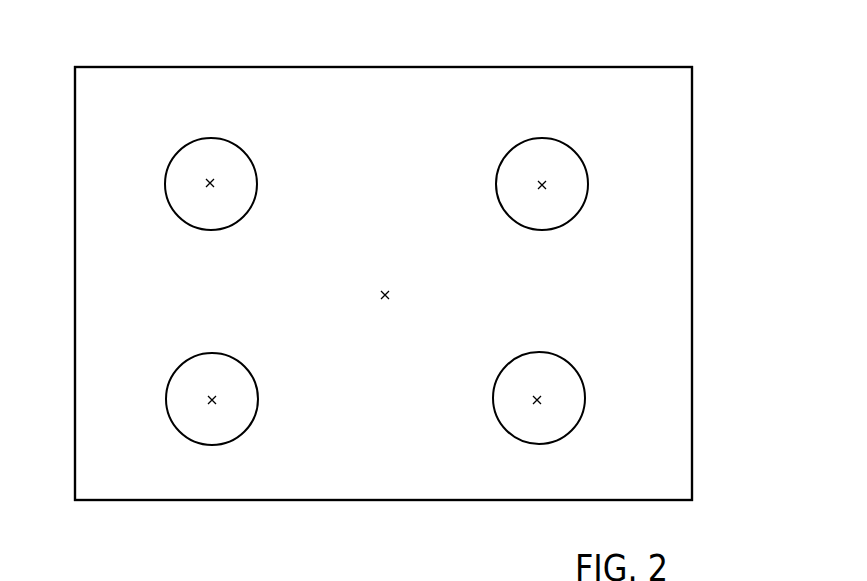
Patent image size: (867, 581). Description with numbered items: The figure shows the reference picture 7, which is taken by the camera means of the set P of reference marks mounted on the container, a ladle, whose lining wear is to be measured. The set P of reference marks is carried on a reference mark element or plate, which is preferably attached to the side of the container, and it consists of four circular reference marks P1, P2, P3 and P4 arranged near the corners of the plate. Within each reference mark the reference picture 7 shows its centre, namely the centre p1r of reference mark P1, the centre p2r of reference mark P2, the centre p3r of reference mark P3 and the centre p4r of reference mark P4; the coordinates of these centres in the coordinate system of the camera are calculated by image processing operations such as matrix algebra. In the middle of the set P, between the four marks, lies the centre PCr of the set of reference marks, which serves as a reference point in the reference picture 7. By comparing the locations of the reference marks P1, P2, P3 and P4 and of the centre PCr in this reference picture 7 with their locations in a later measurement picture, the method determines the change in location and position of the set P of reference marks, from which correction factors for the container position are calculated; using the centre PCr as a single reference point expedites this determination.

The reference picture 7 is at (727, 178).
The set of reference marks P is at (464, 82).
The reference mark P1 is at (252, 137).
The reference mark P2 is at (573, 133).
The reference mark P3 is at (262, 432).
The reference mark P4 is at (498, 435).
The centre of reference mark p1r is at (207, 187).
The centre of reference mark p2r is at (536, 188).
The centre of reference mark p3r is at (220, 402).
The centre of reference mark p4r is at (545, 402).
The centre of the set of reference marks PCr is at (390, 297).